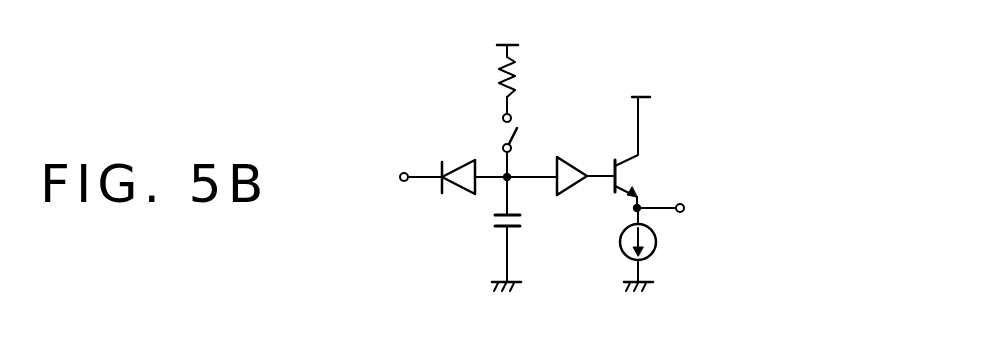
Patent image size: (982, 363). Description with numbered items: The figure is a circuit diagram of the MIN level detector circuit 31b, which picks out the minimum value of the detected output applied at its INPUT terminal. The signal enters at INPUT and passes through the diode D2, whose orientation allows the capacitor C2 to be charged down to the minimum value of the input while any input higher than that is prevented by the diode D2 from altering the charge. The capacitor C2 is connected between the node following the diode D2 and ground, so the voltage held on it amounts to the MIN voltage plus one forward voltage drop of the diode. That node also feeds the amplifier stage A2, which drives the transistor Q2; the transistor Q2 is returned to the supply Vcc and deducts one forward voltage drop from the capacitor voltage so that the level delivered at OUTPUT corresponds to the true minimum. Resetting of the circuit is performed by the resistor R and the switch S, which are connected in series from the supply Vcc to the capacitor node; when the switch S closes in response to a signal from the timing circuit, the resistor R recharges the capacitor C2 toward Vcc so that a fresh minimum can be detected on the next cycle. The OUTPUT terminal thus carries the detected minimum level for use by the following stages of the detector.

The MIN level detector circuit 31b is at (362, 118).
The diode D2 is at (463, 160).
The capacitor C2 is at (492, 223).
The switch S is at (523, 138).
The resistor R is at (522, 79).
The amplifier A2 is at (570, 162).
The transistor Q2 is at (608, 183).
The supply voltage Vcc is at (610, 70).
The input terminal INPUT is at (375, 178).
The output terminal OUTPUT is at (715, 209).